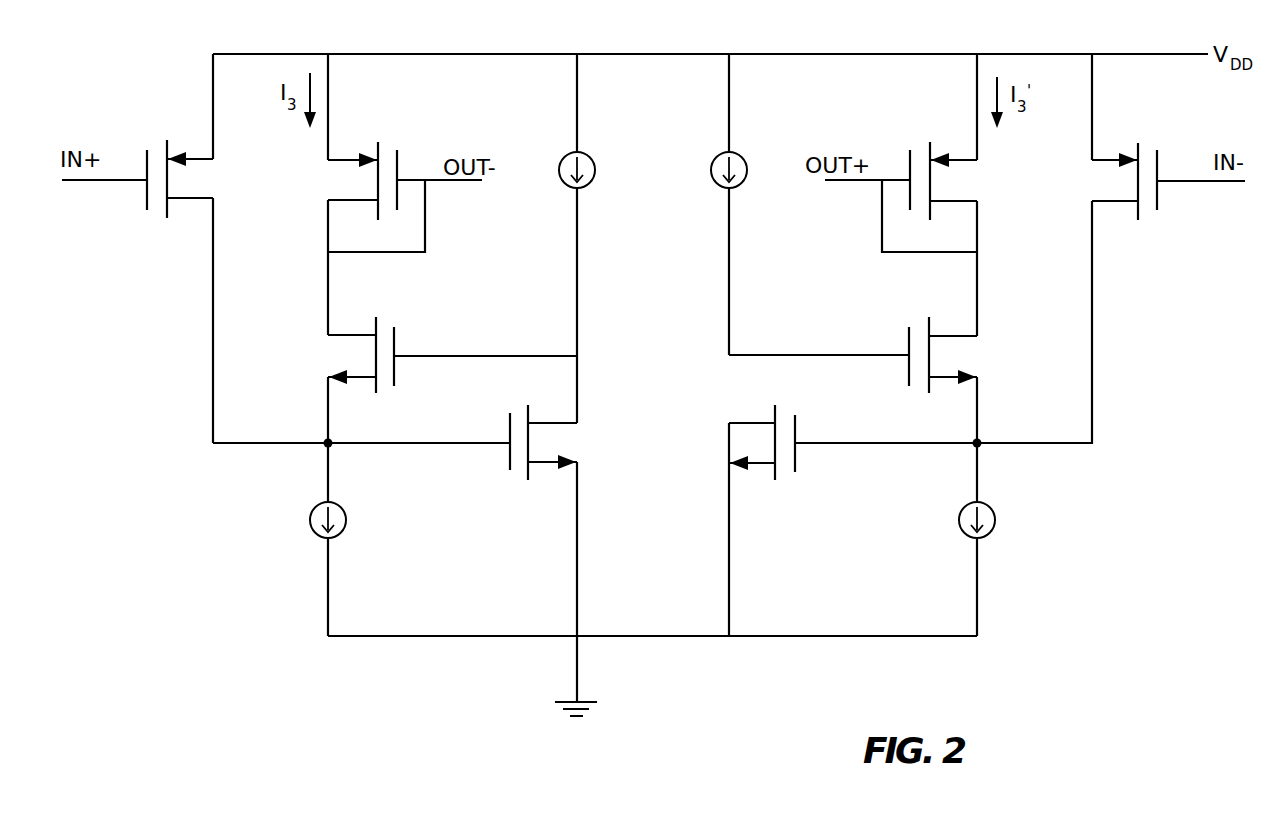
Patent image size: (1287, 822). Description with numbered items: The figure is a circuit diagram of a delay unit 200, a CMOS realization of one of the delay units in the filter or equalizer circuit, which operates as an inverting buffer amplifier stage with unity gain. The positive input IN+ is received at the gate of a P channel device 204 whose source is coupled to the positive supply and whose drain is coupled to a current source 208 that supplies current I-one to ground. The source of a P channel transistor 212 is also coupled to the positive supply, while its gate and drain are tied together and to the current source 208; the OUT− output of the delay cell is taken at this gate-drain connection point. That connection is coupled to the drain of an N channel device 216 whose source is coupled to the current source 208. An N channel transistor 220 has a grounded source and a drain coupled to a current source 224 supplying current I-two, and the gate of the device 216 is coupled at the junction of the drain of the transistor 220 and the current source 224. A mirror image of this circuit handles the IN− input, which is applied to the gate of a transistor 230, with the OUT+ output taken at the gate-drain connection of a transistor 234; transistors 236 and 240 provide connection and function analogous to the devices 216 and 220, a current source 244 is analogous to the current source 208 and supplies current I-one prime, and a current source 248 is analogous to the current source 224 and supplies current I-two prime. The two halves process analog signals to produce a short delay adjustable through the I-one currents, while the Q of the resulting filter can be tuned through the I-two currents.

The delay unit 200 is at (1160, 631).
The P channel device 204 is at (142, 201).
The current source 208 is at (341, 536).
The P channel transistor 212 is at (398, 158).
The N channel device 216 is at (397, 378).
The N channel transistor 220 is at (507, 462).
The current source 224 is at (566, 186).
The transistor 230 is at (1160, 206).
The transistor 234 is at (908, 158).
The transistor 236 is at (907, 342).
The transistor 240 is at (797, 463).
The current source 244 is at (960, 523).
The current source 248 is at (719, 188).